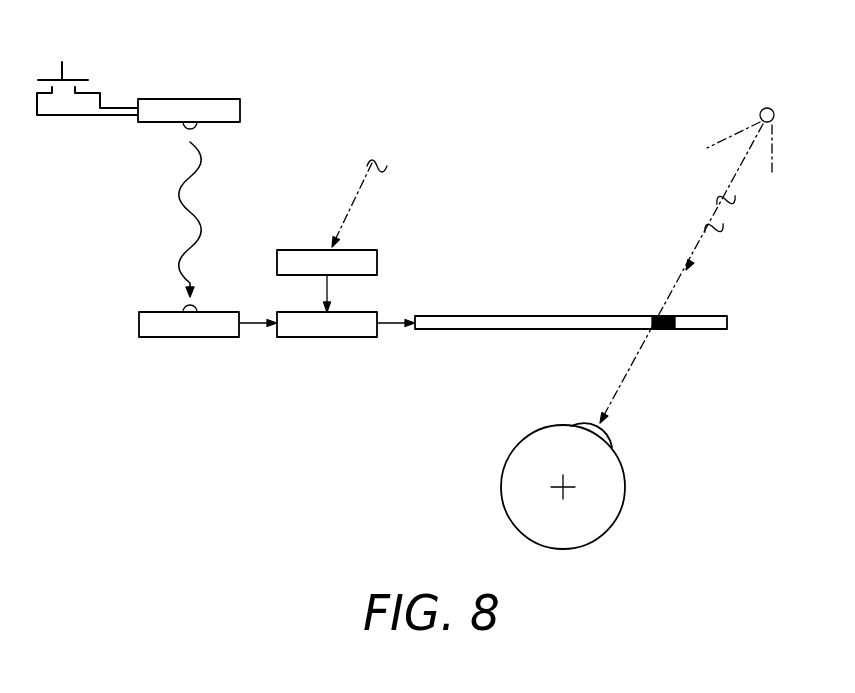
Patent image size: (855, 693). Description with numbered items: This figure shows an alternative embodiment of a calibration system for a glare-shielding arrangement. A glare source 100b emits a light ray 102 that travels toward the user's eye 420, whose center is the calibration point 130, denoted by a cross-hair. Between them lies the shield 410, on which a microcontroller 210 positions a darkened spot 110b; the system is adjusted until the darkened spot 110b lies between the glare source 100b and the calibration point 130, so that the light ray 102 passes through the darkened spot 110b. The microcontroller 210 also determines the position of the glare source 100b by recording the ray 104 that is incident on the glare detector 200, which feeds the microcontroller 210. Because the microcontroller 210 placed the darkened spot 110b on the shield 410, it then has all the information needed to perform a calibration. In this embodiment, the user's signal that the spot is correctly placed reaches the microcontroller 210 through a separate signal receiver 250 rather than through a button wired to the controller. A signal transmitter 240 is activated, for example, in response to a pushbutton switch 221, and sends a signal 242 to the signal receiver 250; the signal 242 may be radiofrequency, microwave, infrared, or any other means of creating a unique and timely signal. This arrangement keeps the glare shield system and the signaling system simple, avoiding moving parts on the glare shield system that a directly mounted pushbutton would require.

The pushbutton switch 221 is at (63, 67).
The signal transmitter 240 is at (189, 114).
The signal 242 is at (180, 228).
The signal receiver 250 is at (208, 321).
The glare detector 200 is at (327, 281).
The microcontroller 210 is at (346, 324).
The ray 104 is at (364, 189).
The shield 410 is at (481, 315).
The darkened spot 110b is at (655, 316).
The glare source 100b is at (760, 111).
The light ray 102 is at (682, 266).
The eye 420 is at (510, 455).
The calibration point 130 is at (592, 476).